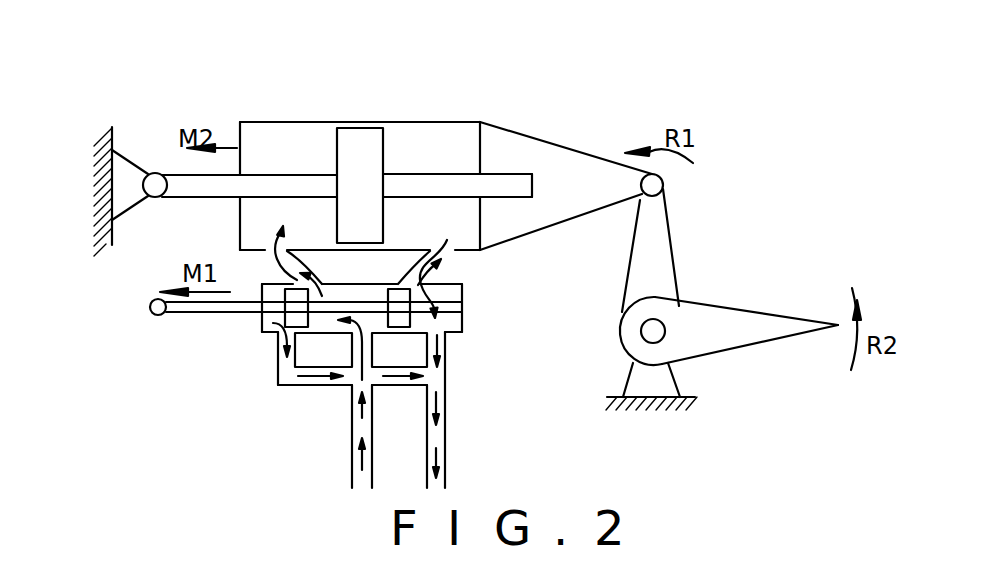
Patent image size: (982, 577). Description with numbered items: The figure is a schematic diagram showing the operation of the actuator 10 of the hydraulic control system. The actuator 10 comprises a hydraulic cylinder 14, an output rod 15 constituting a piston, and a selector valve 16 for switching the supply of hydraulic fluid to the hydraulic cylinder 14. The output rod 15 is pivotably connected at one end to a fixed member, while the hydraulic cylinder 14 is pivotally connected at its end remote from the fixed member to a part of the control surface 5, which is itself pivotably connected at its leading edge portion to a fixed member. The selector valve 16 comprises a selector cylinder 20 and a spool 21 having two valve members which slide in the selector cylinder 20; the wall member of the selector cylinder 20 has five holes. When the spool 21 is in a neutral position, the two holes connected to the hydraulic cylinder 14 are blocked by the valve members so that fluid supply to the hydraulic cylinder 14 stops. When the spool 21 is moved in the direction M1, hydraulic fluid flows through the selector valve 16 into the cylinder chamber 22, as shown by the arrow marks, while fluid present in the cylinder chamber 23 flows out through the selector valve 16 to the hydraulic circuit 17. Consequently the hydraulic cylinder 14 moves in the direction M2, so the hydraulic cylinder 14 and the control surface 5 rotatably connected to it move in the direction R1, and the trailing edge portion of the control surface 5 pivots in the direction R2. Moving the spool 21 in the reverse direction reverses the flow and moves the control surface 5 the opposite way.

The control surface 5 is at (733, 316).
The actuator 10 is at (512, 96).
The hydraulic cylinder 14 is at (411, 122).
The output rod 15 is at (505, 183).
The selector valve 16 is at (486, 316).
The hydraulic circuit 17 is at (352, 432).
The selector cylinder 20 is at (336, 272).
The spool 21 is at (218, 313).
The cylinder chamber 22 is at (292, 129).
The cylinder chamber 23 is at (456, 133).